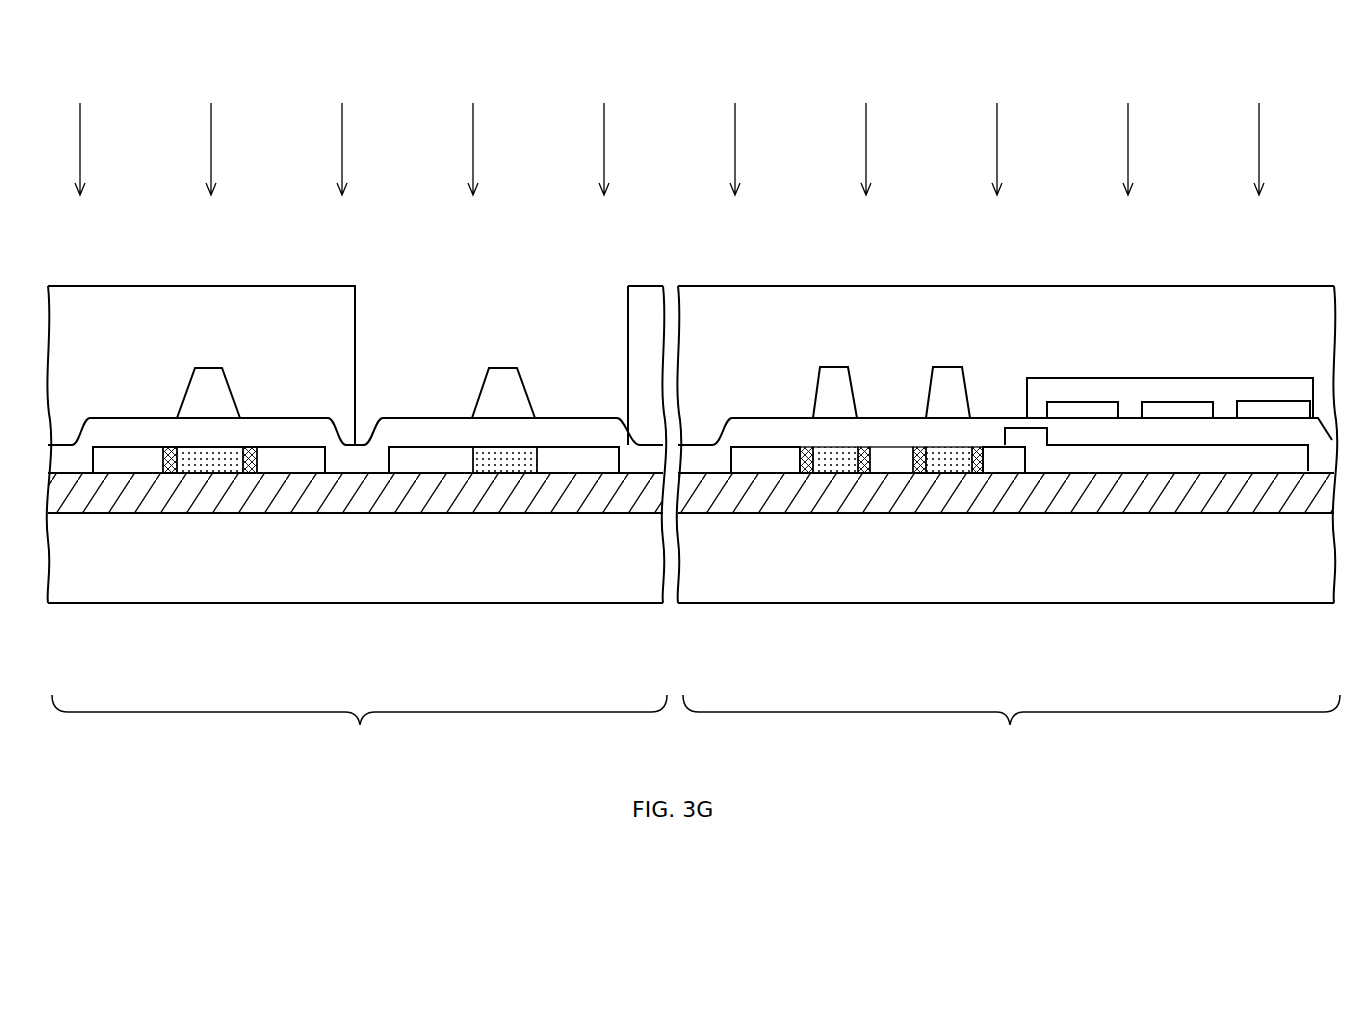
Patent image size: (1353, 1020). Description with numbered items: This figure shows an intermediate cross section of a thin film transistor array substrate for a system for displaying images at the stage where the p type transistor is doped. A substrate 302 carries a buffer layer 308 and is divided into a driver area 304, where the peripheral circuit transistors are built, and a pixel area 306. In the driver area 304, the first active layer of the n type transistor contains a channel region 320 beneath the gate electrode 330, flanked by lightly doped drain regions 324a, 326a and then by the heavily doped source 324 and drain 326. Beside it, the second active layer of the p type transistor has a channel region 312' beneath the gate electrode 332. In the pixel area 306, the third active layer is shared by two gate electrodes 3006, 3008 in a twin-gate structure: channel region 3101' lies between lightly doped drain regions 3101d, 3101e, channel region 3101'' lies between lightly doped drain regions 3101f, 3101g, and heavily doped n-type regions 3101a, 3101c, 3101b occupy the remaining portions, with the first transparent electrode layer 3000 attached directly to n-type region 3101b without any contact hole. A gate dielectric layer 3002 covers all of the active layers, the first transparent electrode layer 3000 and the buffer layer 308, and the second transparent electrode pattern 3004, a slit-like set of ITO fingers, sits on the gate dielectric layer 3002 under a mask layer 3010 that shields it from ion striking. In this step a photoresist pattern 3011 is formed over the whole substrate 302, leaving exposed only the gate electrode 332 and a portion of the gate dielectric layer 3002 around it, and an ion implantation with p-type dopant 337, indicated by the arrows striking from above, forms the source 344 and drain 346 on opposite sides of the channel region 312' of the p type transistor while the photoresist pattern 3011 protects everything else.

The p-type dopant 337 is at (1260, 145).
The photoresist pattern 3011 is at (146, 298).
The gate dielectric layer 3002 is at (448, 432).
The gate electrode 330 is at (215, 388).
The gate electrode 332 is at (510, 388).
The gate electrode 3006 is at (835, 380).
The gate electrode 3008 is at (948, 380).
The mask layer 3010 is at (1162, 390).
The first transparent electrode layer 3000 is at (1257, 450).
The second transparent electrode pattern 3004 is at (1280, 403).
The buffer layer 308 is at (337, 505).
The substrate 302 is at (337, 580).
The driver area 304 is at (359, 724).
The pixel area 306 is at (1011, 724).
The channel region 320 is at (212, 463).
The source 324 is at (118, 463).
The lightly doped drain region 324a is at (168, 463).
The lightly doped drain region 326a is at (258, 463).
The drain 326 is at (287, 463).
The source 344 is at (430, 463).
The channel region 312' is at (504, 562).
The drain 346 is at (582, 463).
The heavily doped n-type region 3101a is at (763, 463).
The lightly doped drain region 3101d is at (808, 463).
The channel region 3101' is at (807, 547).
The lightly doped drain region 3101e is at (867, 463).
The heavily doped n-type region 3101c is at (893, 463).
The lightly doped drain region 3101f is at (923, 463).
The channel region 3101'' is at (968, 547).
The lightly doped drain region 3101g is at (987, 463).
The heavily doped n-type region 3101b is at (1003, 463).